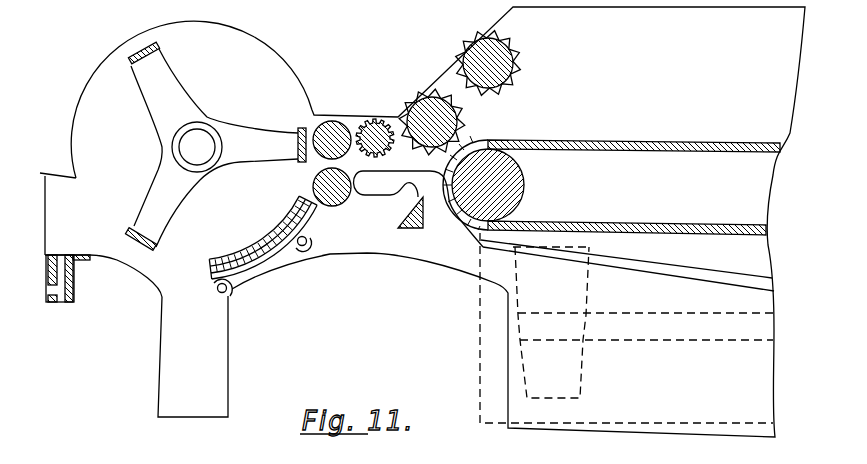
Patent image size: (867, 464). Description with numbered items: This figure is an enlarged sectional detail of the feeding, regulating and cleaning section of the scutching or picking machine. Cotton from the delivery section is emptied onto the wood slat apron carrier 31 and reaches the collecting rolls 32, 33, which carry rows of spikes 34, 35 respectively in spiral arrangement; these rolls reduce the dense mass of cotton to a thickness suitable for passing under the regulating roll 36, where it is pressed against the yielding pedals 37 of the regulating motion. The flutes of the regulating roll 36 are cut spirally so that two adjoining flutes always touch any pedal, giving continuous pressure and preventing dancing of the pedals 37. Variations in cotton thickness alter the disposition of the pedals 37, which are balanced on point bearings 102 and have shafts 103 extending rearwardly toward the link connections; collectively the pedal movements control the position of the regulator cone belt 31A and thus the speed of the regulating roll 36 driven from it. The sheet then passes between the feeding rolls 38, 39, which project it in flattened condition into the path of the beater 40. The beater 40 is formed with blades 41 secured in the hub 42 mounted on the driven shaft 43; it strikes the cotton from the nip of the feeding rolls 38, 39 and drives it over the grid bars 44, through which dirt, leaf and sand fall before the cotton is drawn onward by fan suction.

The wood slat apron carrier 31 is at (652, 142).
The regulator cone belt 31A is at (658, 334).
The collecting roll 32 is at (478, 38).
The collecting roll 33 is at (425, 100).
The rows of spikes 34 is at (521, 68).
The rows of spikes 35 is at (403, 100).
The regulating roll 36 is at (372, 120).
The yielding pedals 37 is at (373, 196).
The feeding roll 38 is at (332, 121).
The feeding roll 39 is at (333, 206).
The beater 40 is at (246, 44).
The blades 41 is at (160, 50).
The hub 42 is at (212, 168).
The driven shaft 43 is at (183, 147).
The grid bars 44 is at (62, 257).
The point bearings 102 is at (418, 228).
The pedal shafts 103 is at (633, 261).